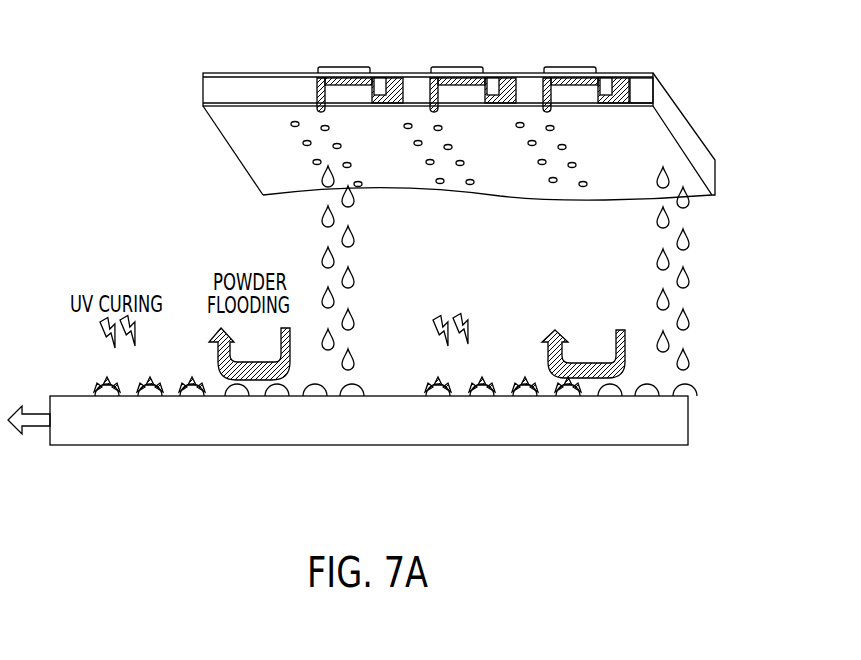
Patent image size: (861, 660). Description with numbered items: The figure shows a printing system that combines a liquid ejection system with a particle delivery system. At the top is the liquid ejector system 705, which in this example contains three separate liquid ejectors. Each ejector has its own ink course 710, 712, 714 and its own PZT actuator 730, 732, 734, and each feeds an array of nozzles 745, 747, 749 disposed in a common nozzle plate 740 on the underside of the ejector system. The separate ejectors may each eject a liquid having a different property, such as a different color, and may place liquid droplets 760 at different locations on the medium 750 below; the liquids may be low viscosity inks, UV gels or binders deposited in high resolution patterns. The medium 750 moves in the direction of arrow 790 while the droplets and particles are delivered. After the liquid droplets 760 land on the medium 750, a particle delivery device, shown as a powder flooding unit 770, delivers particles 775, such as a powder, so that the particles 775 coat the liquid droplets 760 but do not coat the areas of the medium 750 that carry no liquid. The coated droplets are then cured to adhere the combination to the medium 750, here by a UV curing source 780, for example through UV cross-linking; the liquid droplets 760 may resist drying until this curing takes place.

The liquid ejector system 705 is at (212, 92).
The ink course 710 is at (318, 90).
The ink course 712 is at (492, 90).
The ink course 714 is at (628, 92).
The PZT actuator 730 is at (342, 68).
The PZT actuator 732 is at (457, 68).
The PZT actuator 734 is at (568, 68).
The nozzle plate 740 is at (510, 195).
The array of nozzles 745 is at (360, 187).
The array of nozzles 747 is at (441, 184).
The array of nozzles 749 is at (584, 187).
The medium 750 is at (603, 446).
The liquid droplets 760 is at (688, 282).
The powder flooding nozzle 770 is at (557, 362).
The particles 775 is at (432, 388).
The UV curing source 780 is at (437, 343).
The arrow 790 is at (30, 422).